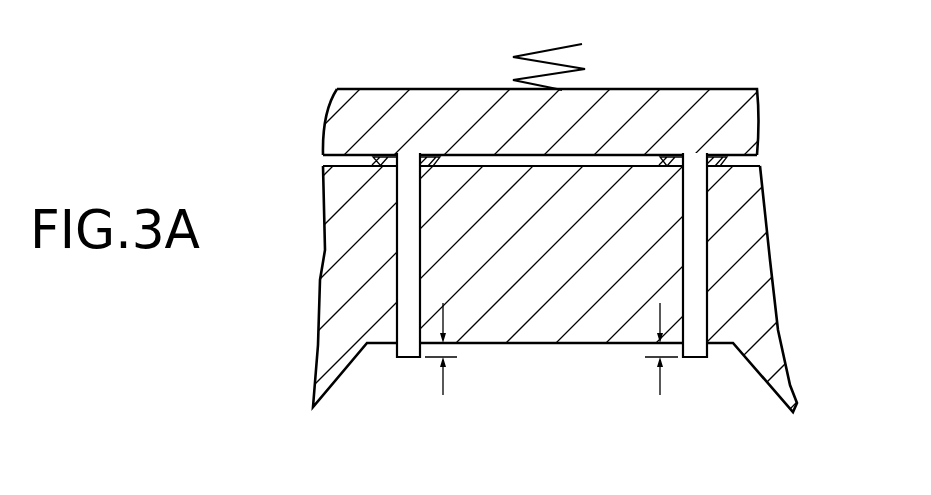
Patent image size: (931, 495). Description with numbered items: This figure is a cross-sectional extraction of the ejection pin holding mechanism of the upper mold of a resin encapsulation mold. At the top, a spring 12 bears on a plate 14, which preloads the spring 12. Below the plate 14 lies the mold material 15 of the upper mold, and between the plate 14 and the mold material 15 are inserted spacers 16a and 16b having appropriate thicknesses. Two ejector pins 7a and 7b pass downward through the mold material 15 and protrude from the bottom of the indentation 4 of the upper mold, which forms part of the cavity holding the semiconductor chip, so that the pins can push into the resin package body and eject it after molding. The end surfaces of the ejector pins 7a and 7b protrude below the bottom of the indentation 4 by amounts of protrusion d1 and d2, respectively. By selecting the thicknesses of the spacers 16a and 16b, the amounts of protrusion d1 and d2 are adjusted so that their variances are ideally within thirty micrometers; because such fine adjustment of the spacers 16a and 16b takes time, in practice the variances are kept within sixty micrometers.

The indentation 4 is at (555, 371).
The ejection pin 7a is at (397, 238).
The ejection pin 7b is at (707, 262).
The spring 12 is at (587, 50).
The plate 14 is at (693, 124).
The mold material 15 is at (762, 320).
The spacer 16a is at (727, 162).
The spacer 16b is at (378, 160).
The amount of protrusion d1 is at (454, 349).
The amount of protrusion d2 is at (673, 349).